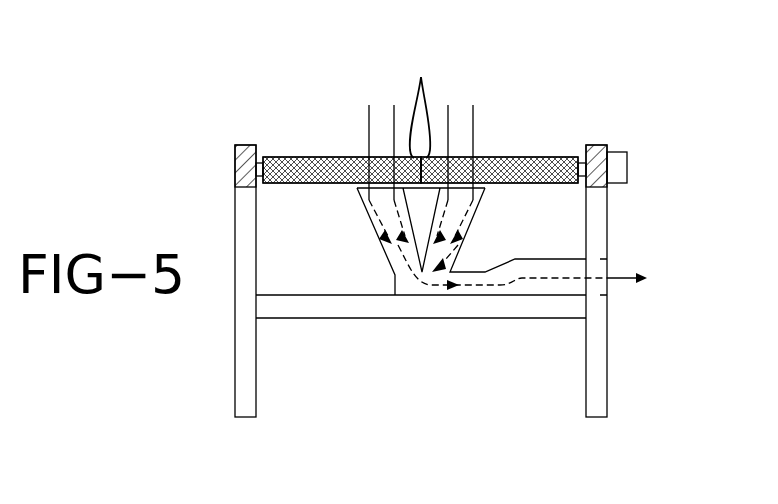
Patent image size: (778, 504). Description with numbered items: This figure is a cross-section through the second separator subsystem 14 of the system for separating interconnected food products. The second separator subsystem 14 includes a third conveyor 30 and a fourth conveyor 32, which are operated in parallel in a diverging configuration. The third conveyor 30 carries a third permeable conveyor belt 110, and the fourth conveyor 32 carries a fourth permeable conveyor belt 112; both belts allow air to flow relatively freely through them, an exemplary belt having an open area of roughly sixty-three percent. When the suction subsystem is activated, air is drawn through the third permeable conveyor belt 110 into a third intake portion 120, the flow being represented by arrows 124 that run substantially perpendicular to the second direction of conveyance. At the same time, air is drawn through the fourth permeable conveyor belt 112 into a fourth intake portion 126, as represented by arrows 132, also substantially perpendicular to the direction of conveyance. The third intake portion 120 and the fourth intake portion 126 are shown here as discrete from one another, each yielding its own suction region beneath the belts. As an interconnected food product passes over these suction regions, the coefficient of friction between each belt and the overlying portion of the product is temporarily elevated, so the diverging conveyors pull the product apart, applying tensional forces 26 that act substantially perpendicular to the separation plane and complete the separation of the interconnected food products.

The second separator subsystem 14 is at (150, 101).
The tensional forces 26 is at (420, 115).
The third conveyor 30 is at (290, 157).
The fourth conveyor 32 is at (532, 156).
The third permeable conveyor belt 110 is at (314, 168).
The fourth permeable conveyor belt 112 is at (562, 165).
The third intake portion 120 is at (366, 206).
The arrows 124 is at (368, 125).
The fourth intake portion 126 is at (477, 206).
The arrows 132 is at (448, 125).